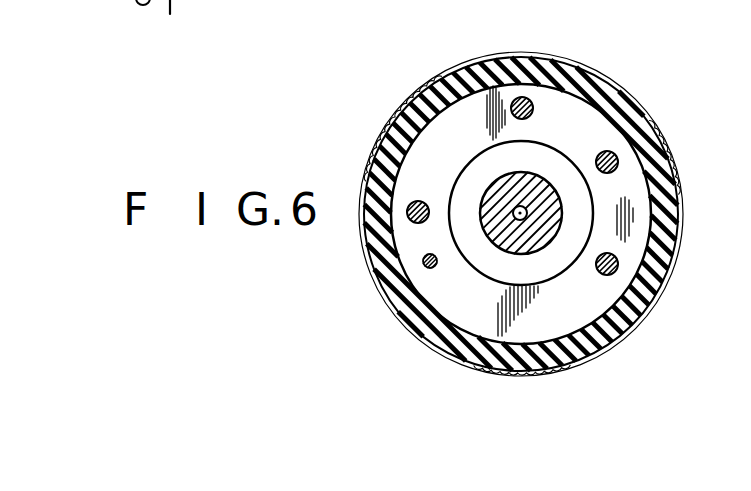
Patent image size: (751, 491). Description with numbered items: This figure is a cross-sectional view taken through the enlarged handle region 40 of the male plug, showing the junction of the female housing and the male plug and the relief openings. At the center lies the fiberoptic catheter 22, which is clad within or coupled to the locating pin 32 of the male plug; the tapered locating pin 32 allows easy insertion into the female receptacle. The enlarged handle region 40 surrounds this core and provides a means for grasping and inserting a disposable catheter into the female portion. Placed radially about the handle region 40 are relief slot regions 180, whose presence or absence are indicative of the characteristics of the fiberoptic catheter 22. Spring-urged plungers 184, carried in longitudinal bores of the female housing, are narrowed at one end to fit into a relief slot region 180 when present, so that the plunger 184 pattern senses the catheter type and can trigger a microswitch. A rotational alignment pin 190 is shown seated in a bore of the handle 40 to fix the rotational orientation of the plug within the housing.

The enlarged handle region 40 is at (538, 42).
The relief slot region 180 is at (497, 125).
The plunger 184 is at (603, 152).
The rotational alignment pin 190 is at (424, 263).
The locating pin 32 is at (481, 243).
The fiberoptic catheter 22 is at (529, 221).